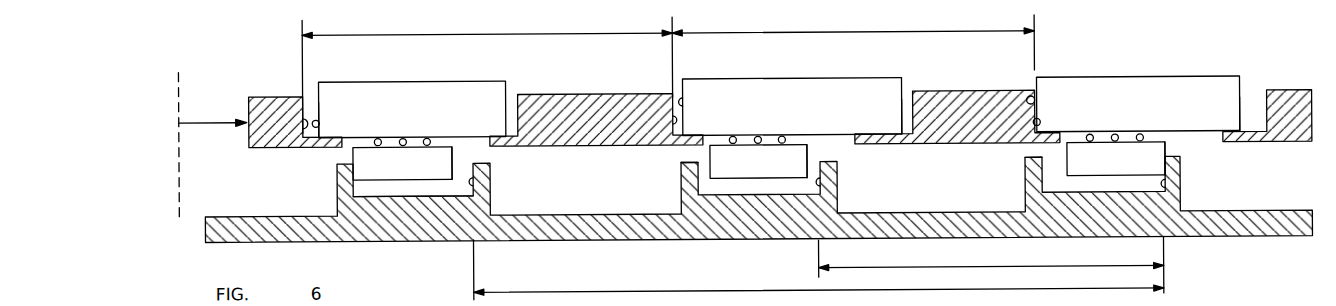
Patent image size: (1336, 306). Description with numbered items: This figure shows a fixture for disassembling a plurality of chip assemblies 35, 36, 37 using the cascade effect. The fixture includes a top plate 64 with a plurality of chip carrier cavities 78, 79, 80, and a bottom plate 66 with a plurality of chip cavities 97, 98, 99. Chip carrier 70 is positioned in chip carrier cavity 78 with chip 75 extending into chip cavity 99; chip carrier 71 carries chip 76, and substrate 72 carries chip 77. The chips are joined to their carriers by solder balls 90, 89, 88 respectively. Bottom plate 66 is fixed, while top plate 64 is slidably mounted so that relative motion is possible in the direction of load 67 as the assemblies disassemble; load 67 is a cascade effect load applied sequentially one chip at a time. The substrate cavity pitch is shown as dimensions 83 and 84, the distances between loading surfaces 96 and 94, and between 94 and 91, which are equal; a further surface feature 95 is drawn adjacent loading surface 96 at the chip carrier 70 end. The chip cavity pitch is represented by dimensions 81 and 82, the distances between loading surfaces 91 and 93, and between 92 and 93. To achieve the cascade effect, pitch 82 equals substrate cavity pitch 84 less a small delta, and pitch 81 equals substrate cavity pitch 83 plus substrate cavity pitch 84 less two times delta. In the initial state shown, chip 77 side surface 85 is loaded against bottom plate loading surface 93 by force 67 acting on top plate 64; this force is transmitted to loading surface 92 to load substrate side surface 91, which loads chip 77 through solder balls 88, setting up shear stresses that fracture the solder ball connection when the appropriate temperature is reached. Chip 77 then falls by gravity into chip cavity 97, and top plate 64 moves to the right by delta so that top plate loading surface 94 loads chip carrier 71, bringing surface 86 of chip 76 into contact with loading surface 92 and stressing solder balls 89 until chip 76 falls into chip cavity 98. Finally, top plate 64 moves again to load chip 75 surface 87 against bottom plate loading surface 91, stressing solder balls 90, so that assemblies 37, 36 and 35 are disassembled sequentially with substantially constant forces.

The chip assembly 35 is at (412, 91).
The chip assembly 36 is at (792, 89).
The chip assembly 37 is at (1138, 84).
The top plate 64 is at (258, 108).
The bottom plate 66 is at (1093, 217).
The load 67 is at (212, 116).
The chip carrier 70 is at (360, 85).
The chip carrier 71 is at (768, 86).
The substrate 72 is at (1110, 85).
The chip 75 is at (368, 170).
The chip 76 is at (748, 170).
The chip 77 is at (1128, 163).
The chip carrier cavity 78 is at (311, 97).
The chip carrier cavity 79 is at (907, 97).
The chip carrier cavity 80 is at (1253, 103).
The chip cavity pitch 81 is at (583, 291).
The chip cavity pitch 82 is at (933, 258).
The substrate cavity pitch 83 is at (413, 31).
The substrate cavity pitch 84 is at (772, 31).
The chip side surface 85 is at (1165, 144).
The chip surface 86 is at (807, 160).
The chip surface 87 is at (452, 156).
The solder balls 88 is at (1140, 136).
The solder balls 89 is at (767, 135).
The solder balls 90 is at (392, 135).
The loading surface 91 is at (1036, 121).
The loading surface 92 is at (1027, 102).
The loading surface 93 is at (686, 103).
The loading surface 94 is at (674, 117).
The detent 95 is at (321, 121).
The loading surface 96 is at (304, 117).
The chip cavity 97 is at (1050, 172).
The chip cavity 98 is at (700, 178).
The chip cavity 99 is at (433, 185).